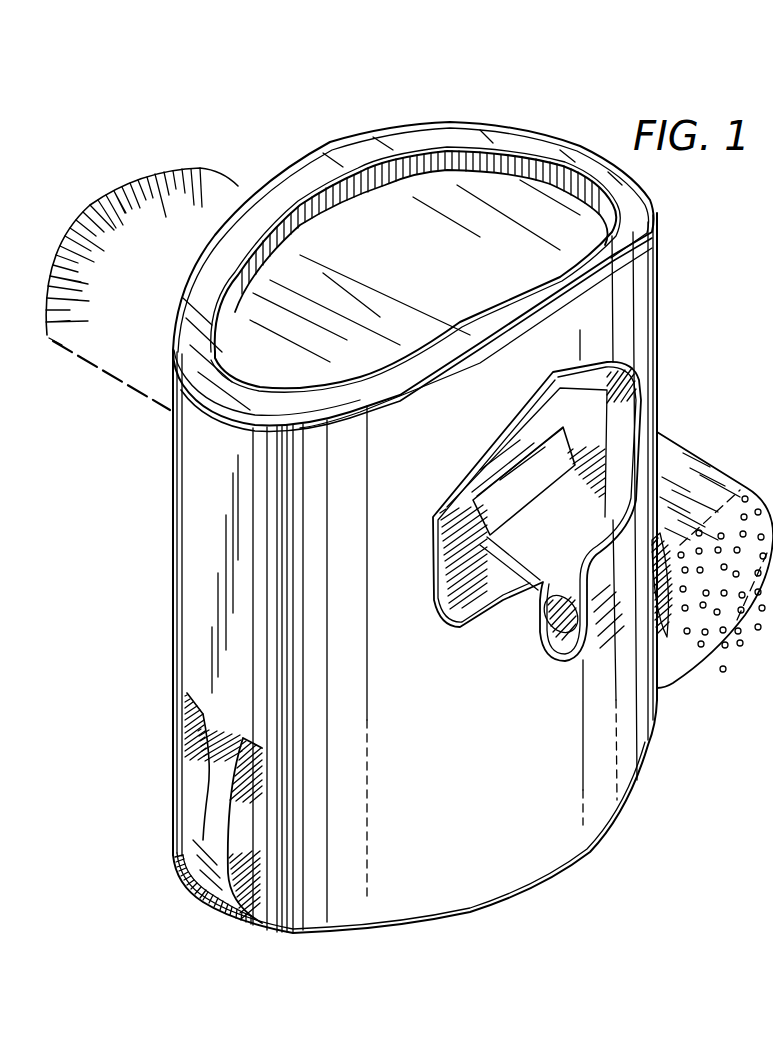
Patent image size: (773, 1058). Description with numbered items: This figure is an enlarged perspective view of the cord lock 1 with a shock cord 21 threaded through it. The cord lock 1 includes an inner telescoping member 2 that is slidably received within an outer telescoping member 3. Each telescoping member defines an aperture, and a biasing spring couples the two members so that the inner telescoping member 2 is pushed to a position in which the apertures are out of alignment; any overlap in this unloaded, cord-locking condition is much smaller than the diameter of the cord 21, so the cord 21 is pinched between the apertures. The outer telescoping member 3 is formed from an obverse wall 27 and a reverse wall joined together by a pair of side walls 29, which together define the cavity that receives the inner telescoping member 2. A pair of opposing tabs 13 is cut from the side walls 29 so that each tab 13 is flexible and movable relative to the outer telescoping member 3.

The cord lock 1 is at (690, 323).
The inner telescoping member 2 is at (560, 173).
The outer telescoping member 3 is at (440, 140).
The tab 13 is at (207, 808).
The cord 21 is at (250, 194).
The obverse wall 27 is at (563, 882).
The side wall 29 is at (193, 612).